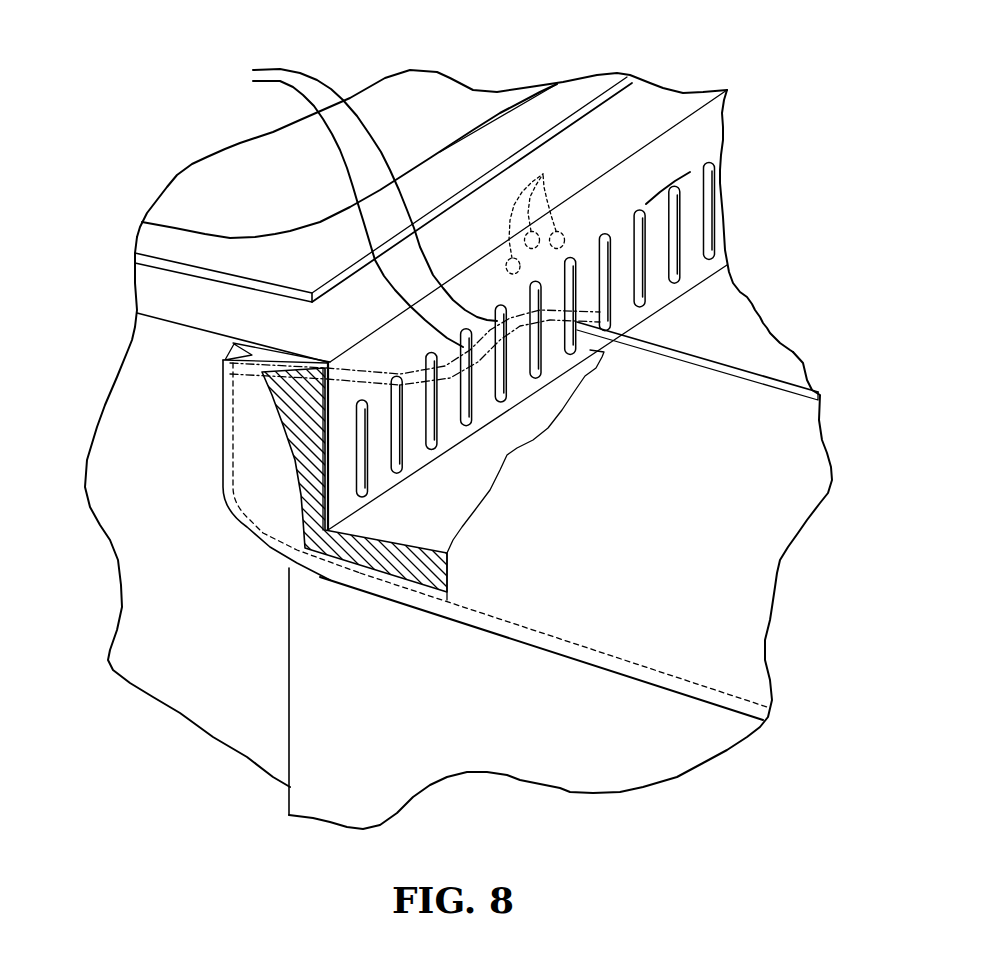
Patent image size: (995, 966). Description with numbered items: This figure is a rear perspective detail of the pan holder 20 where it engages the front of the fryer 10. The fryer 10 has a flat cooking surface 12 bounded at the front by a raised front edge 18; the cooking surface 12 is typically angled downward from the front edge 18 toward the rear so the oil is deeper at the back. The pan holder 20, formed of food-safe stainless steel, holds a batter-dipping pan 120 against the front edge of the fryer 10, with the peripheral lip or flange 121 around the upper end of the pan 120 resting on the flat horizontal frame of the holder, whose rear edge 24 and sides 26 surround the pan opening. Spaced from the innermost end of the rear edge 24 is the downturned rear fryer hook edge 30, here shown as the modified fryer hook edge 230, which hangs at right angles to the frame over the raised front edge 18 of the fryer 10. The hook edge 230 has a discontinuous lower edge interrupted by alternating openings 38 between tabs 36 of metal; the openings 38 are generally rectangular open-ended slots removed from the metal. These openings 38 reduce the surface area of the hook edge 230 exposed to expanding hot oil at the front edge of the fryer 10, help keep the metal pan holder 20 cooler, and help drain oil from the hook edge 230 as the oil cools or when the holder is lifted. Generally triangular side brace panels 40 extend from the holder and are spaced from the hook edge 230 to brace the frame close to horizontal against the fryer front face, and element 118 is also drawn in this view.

The fryer 10 is at (612, 763).
The cooking surface 12 is at (727, 350).
The raised front edge 18 is at (313, 463).
The pan holder 20 is at (662, 78).
The rear edge 24 is at (680, 110).
The sides 26 is at (167, 295).
The rear fryer hook edge 30 is at (700, 130).
The fryer hook edge 230 is at (582, 310).
The tabs 36 is at (660, 242).
The openings 38 is at (460, 226).
The side brace panels 40 is at (168, 598).
The bracket wall 118 is at (410, 545).
The batter-dipping pan 120 is at (423, 93).
The peripheral lip or flange 121 is at (558, 97).